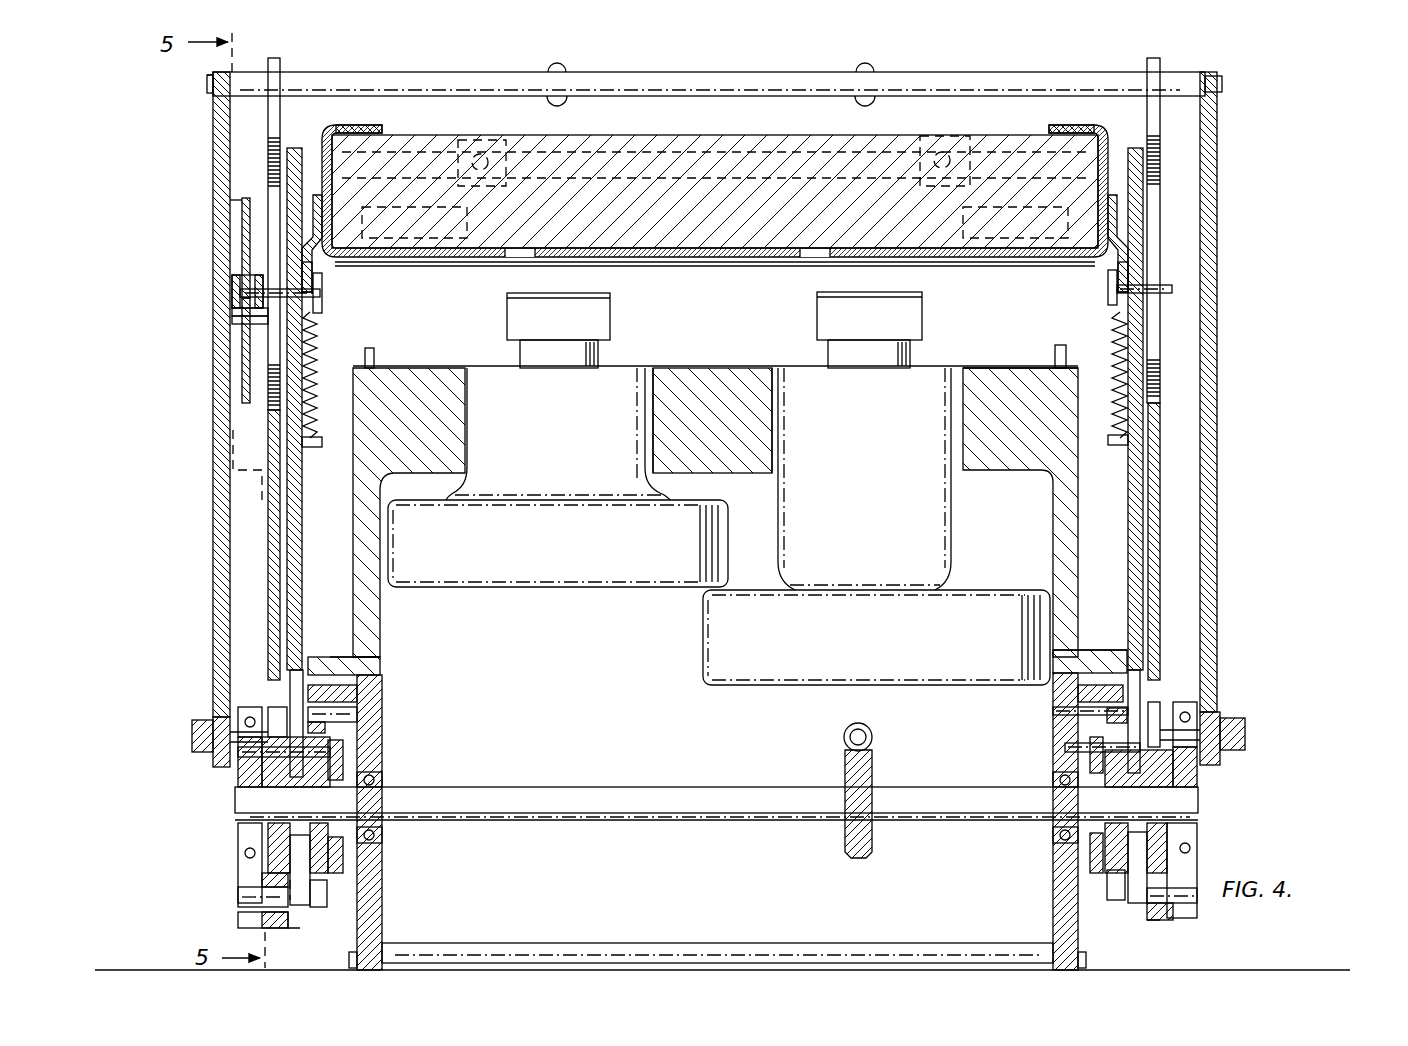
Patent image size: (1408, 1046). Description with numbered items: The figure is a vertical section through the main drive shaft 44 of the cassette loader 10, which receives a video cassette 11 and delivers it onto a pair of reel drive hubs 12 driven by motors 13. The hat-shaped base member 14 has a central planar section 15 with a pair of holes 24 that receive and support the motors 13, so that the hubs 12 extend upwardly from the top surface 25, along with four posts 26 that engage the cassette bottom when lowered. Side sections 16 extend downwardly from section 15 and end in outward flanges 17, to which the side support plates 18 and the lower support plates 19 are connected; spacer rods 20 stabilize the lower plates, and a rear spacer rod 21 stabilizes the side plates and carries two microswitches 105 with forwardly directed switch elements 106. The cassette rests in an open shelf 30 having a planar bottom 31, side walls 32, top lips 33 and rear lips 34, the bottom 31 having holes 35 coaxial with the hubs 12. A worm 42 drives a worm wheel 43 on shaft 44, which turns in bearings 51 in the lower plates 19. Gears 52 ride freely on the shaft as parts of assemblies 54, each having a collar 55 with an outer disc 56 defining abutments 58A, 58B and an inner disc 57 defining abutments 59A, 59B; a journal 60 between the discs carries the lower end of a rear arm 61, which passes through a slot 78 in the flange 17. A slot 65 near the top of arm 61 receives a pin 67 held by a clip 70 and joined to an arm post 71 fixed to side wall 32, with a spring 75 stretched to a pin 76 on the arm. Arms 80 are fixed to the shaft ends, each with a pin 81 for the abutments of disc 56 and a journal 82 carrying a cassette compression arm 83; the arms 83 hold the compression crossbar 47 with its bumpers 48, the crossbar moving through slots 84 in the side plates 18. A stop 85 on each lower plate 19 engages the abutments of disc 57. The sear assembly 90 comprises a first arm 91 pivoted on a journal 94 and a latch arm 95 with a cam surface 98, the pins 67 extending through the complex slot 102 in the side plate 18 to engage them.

The cassette loader 10 is at (178, 135).
The video cassette 11 is at (725, 136).
The reel drive hubs 12 is at (585, 305).
The motors 13 is at (540, 449).
The base member 14 is at (696, 330).
The planar section 15 is at (685, 368).
The side sections 16 is at (372, 600).
The flanges 17 is at (345, 655).
The side support plates 18 is at (275, 537).
The lower support plates 19 is at (370, 750).
The spacer rods 20 is at (540, 948).
The rear spacer rod 21 is at (432, 140).
The holes 24 is at (652, 410).
The top surface 25 is at (978, 368).
The posts 26 is at (370, 350).
The shelf 30 is at (748, 249).
The bottom 31 is at (648, 255).
The side walls 32 is at (468, 226).
The top lips 33 is at (370, 125).
The rear lips 34 is at (470, 222).
The holes 35 is at (522, 260).
The worm 42 is at (864, 736).
The worm wheel 43 is at (862, 770).
The main drive shaft 44 is at (570, 797).
The cassette compression crossbar 47 is at (662, 72).
The bumpers 48 is at (567, 101).
The bearings 51 is at (378, 781).
The gears 52 is at (335, 855).
The assemblies 54 is at (303, 918).
The collar 55 is at (298, 825).
The outer disc 56 is at (275, 842).
The inner disc 57 is at (318, 858).
The abutment 58A is at (282, 715).
The abutment 58B is at (292, 887).
The abutment 59A is at (330, 727).
The abutment 59B is at (320, 887).
The journal 60 is at (280, 757).
The rear arm 61 is at (302, 517).
The slot 65 is at (318, 266).
The pin 67 is at (240, 294).
The clips 70 is at (322, 290).
The arm post 71 is at (330, 212).
The springs 75 is at (312, 362).
The pins 76 is at (310, 447).
The slots 78 is at (305, 660).
The arms 80 is at (247, 880).
The pin 81 is at (265, 920).
The journal 82 is at (212, 732).
The cassette compression arms 83 is at (220, 458).
The slots 84 is at (282, 60).
The stop 85 is at (335, 697).
The sear assembly 90 is at (210, 340).
The first arm 91 is at (245, 382).
The journal 94 is at (245, 215).
The latch arm 95 is at (235, 288).
The cam surface 98 is at (240, 320).
The slot 102 is at (275, 400).
The microswitches 105 is at (488, 138).
The switch element 106 is at (512, 142).